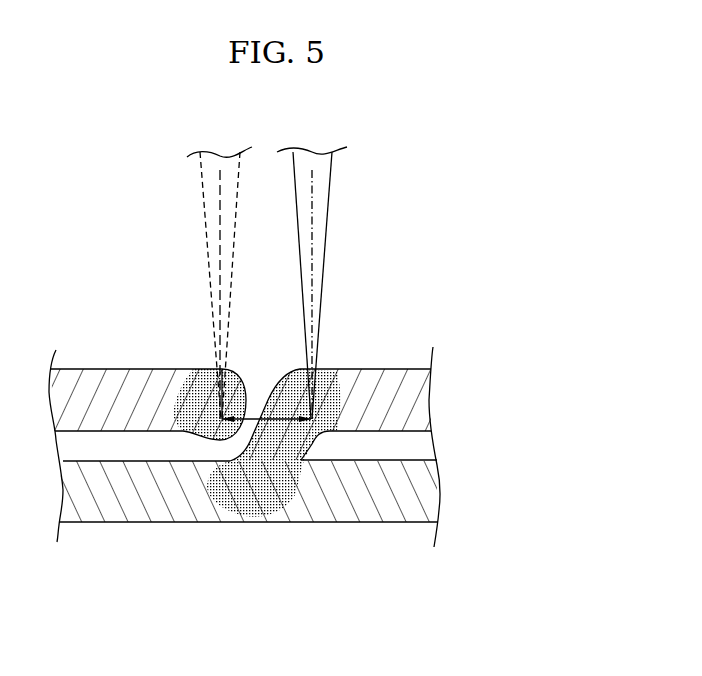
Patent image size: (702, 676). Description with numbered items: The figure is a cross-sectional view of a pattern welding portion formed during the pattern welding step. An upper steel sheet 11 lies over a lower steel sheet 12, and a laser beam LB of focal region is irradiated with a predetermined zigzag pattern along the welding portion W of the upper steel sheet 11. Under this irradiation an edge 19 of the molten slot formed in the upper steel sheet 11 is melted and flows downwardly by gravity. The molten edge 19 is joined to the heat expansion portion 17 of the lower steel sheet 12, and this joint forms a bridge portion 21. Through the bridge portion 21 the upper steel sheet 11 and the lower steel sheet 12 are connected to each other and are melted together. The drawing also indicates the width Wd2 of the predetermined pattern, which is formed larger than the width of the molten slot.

The upper steel sheet 11 is at (377, 369).
The lower steel sheet 12 is at (418, 515).
The heat expansion portion 17 is at (282, 514).
The edge 19 is at (194, 369).
The bridge portion 21 is at (318, 459).
The laser beam LB is at (230, 288).
The welding portion W is at (201, 355).
The width of the predetermined pattern Wd2 is at (245, 515).